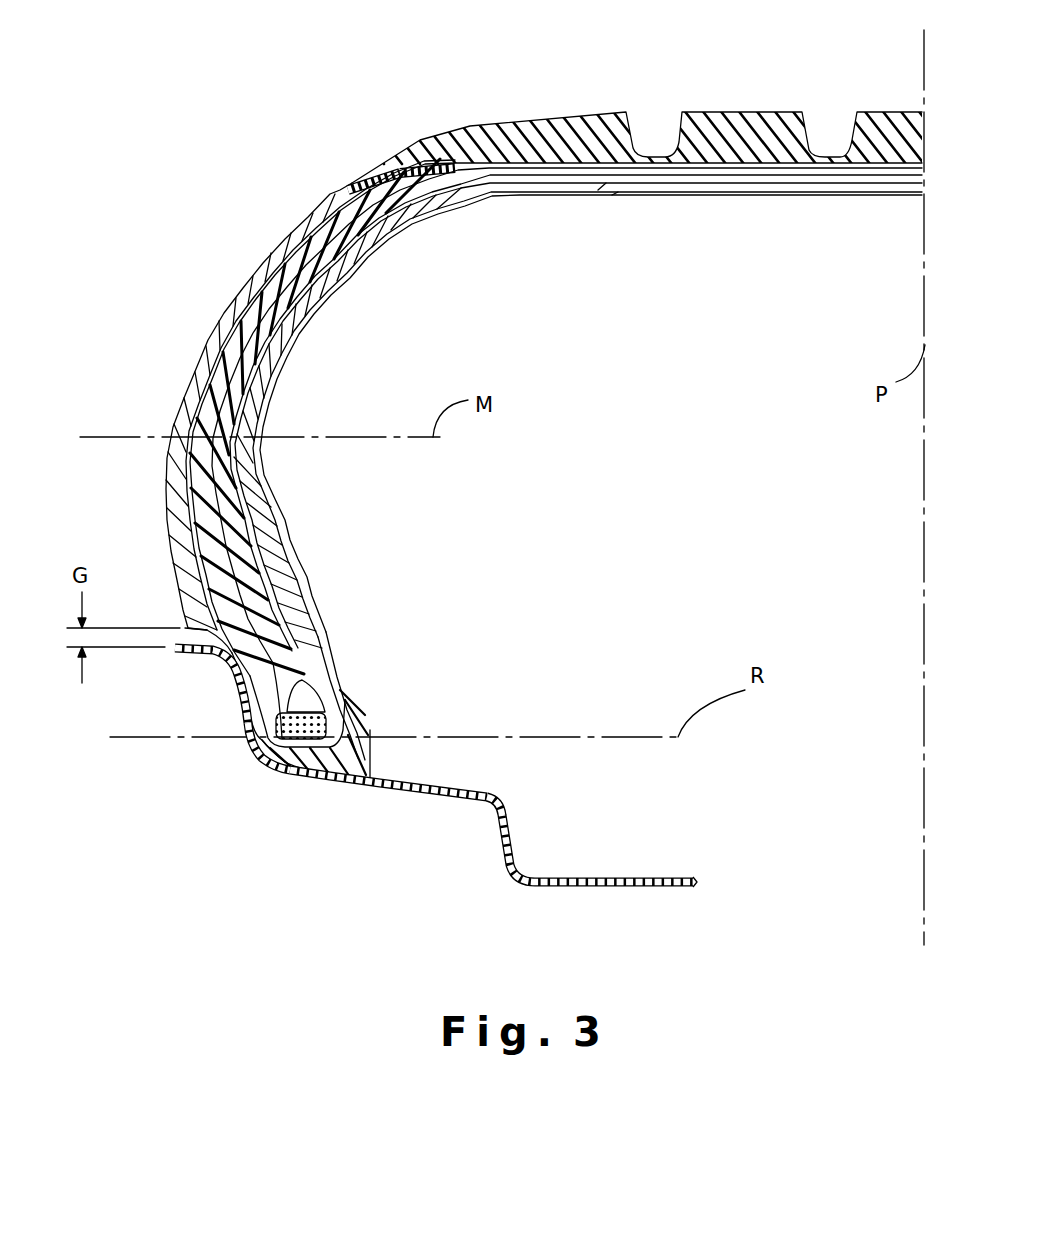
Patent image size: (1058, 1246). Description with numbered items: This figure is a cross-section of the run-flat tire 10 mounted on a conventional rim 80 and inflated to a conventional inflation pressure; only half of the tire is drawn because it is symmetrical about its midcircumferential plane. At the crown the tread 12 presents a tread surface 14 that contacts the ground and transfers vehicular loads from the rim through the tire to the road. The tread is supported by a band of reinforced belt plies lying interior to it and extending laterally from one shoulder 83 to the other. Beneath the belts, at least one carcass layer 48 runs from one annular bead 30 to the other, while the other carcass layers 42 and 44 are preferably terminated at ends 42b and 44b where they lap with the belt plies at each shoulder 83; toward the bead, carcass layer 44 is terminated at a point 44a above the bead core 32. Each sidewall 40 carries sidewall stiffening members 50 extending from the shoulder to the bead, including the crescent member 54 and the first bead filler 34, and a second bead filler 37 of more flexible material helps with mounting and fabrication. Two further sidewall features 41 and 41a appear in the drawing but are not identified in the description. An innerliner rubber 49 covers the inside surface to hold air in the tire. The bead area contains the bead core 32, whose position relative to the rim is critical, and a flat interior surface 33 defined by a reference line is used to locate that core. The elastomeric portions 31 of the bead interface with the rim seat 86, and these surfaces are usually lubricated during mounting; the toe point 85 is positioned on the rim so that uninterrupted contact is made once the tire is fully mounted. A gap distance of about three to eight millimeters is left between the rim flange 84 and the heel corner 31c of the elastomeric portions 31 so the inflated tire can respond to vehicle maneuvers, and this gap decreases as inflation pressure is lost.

The run-flat tire 10 is at (254, 203).
The tread 12 is at (712, 118).
The tread surface 14 is at (573, 108).
The annular bead 30 is at (272, 675).
The elastomeric portions 31 is at (258, 716).
The heel corner 31c is at (188, 631).
The bead core 32 is at (318, 712).
The flat interior surface 33 is at (310, 740).
The first bead filler 34 is at (305, 652).
The second bead filler 37 is at (300, 690).
The sidewall 40 is at (212, 330).
The sidewall outer surface 41 is at (163, 420).
The shoulder portion 41a is at (368, 184).
The carcass layer 42 is at (207, 450).
The end of carcass layer 42b is at (576, 190).
The carcass layer 44 is at (207, 460).
The termination point of carcass layer 44a is at (297, 660).
The end of carcass layer 44b is at (611, 196).
The carcass layer 48 is at (735, 180).
The innerliner rubber 49 is at (652, 190).
The sidewall stiffening members 50 is at (282, 398).
The crescent member 54 is at (300, 325).
The rim 80 is at (507, 474).
The shoulder 83 is at (428, 166).
The rim flange 84 is at (203, 653).
The toe point 85 is at (366, 771).
The rim seat 86 is at (338, 776).